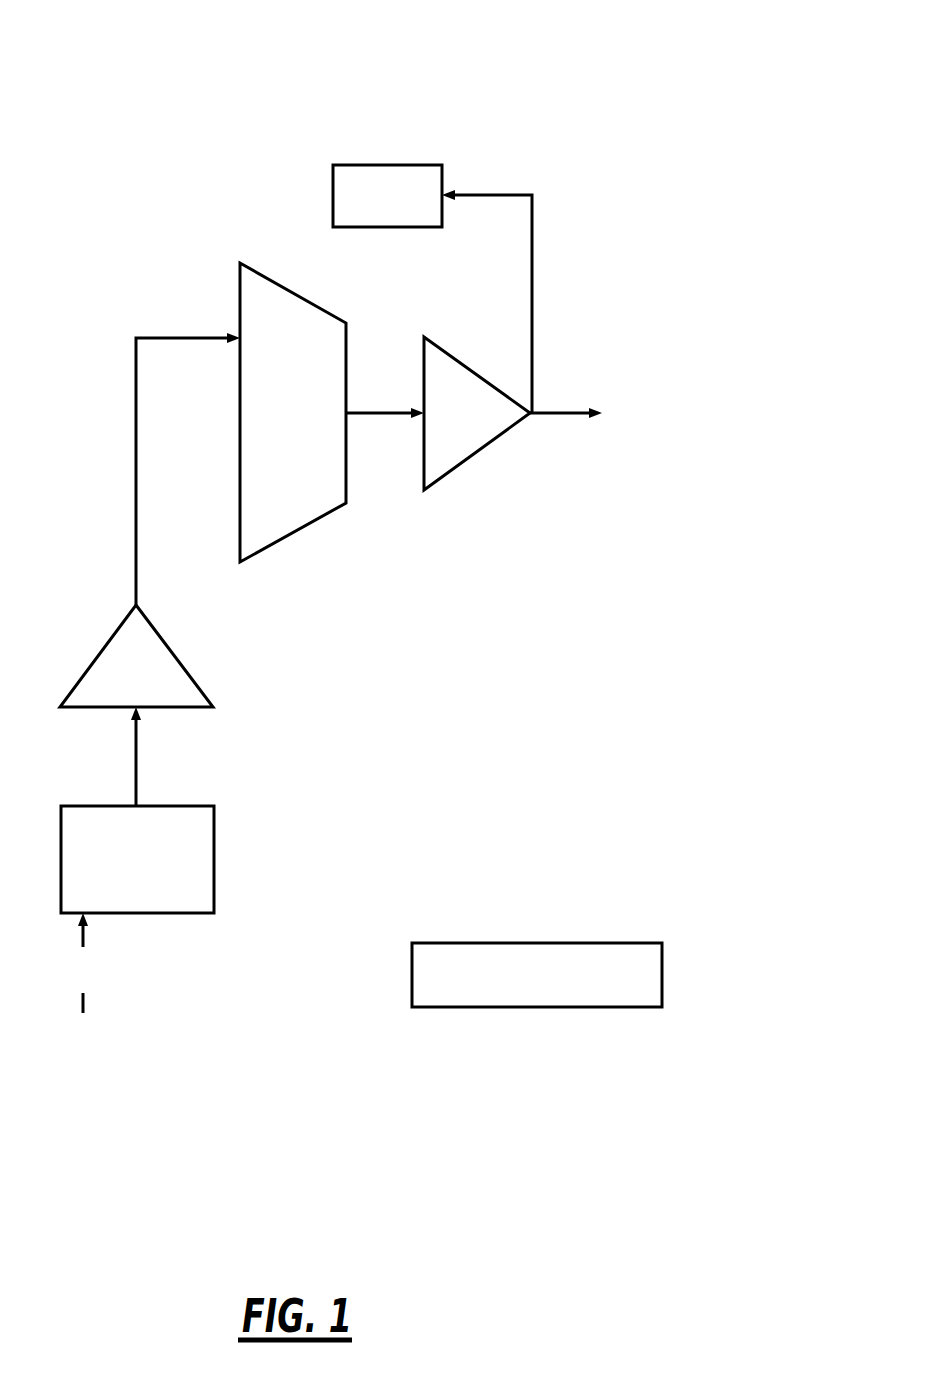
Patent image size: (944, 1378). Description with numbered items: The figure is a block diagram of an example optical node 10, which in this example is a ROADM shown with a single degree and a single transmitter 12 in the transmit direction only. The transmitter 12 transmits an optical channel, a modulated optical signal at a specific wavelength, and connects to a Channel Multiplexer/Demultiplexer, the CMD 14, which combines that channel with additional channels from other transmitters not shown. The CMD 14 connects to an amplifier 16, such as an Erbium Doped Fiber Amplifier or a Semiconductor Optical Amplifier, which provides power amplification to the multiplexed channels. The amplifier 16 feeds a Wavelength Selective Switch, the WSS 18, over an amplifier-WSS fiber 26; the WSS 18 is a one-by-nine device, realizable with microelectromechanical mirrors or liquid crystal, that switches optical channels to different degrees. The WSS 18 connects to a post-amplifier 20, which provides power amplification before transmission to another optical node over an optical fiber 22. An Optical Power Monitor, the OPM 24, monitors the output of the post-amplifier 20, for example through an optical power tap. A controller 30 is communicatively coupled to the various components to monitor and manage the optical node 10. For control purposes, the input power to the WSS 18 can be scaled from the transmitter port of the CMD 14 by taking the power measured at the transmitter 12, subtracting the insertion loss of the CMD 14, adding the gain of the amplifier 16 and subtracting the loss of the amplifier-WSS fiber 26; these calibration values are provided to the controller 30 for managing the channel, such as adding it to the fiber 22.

The optical node 10 is at (592, 68).
The transmitter 12 is at (108, 1005).
The Channel Multiplexer/Demultiplexer (CMD) 14 is at (215, 855).
The amplifier 16 is at (187, 667).
The Wavelength Selective Switch (WSS) 18 is at (330, 312).
The post-amplifier 20 is at (421, 480).
The optical fiber 22 is at (565, 412).
The Optical Power Monitor (OPM) 24 is at (393, 163).
The amplifier-WSS fiber 26 is at (137, 397).
The controller 30 is at (662, 978).